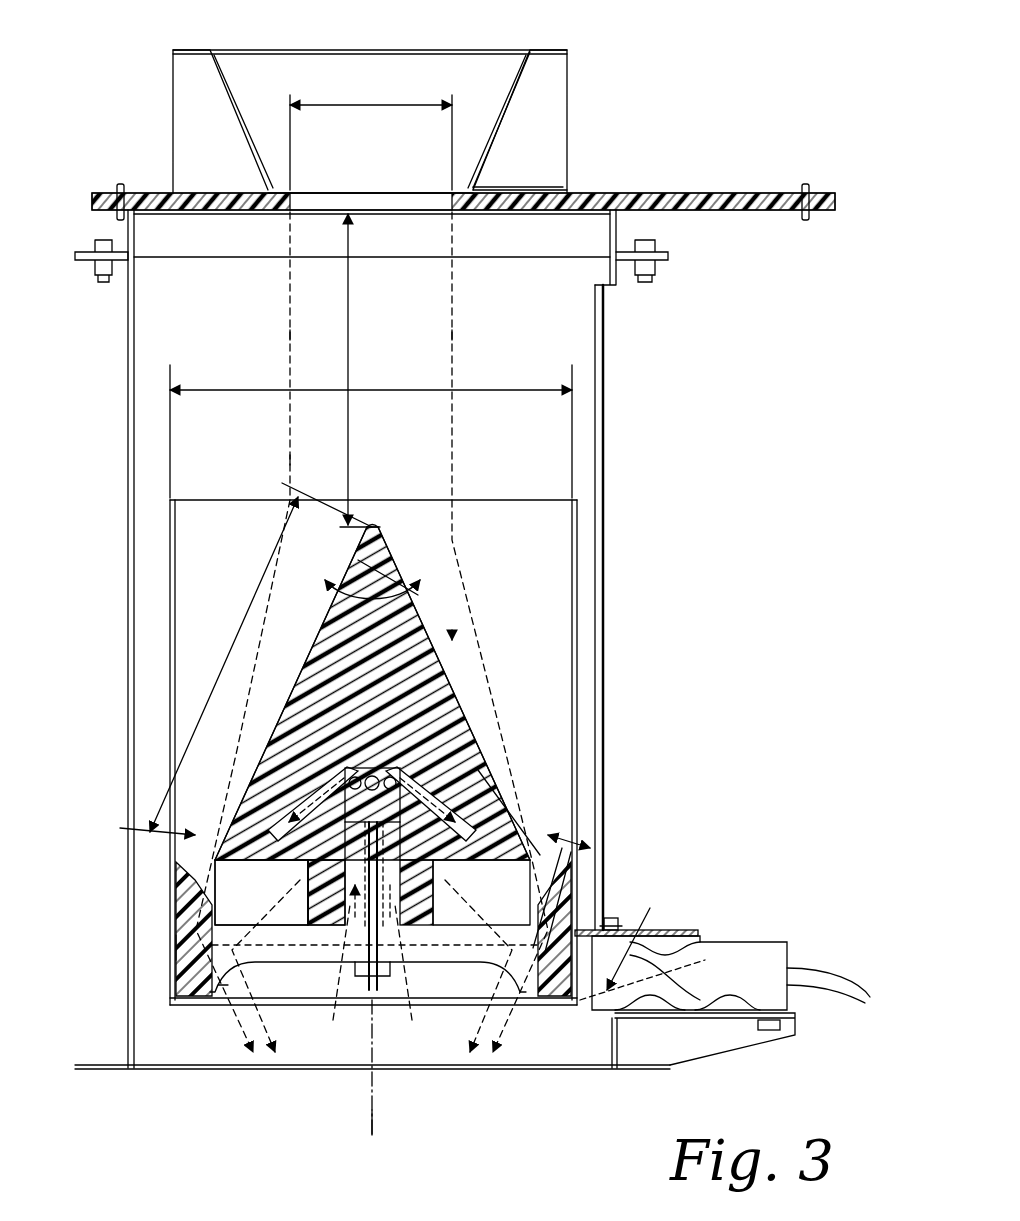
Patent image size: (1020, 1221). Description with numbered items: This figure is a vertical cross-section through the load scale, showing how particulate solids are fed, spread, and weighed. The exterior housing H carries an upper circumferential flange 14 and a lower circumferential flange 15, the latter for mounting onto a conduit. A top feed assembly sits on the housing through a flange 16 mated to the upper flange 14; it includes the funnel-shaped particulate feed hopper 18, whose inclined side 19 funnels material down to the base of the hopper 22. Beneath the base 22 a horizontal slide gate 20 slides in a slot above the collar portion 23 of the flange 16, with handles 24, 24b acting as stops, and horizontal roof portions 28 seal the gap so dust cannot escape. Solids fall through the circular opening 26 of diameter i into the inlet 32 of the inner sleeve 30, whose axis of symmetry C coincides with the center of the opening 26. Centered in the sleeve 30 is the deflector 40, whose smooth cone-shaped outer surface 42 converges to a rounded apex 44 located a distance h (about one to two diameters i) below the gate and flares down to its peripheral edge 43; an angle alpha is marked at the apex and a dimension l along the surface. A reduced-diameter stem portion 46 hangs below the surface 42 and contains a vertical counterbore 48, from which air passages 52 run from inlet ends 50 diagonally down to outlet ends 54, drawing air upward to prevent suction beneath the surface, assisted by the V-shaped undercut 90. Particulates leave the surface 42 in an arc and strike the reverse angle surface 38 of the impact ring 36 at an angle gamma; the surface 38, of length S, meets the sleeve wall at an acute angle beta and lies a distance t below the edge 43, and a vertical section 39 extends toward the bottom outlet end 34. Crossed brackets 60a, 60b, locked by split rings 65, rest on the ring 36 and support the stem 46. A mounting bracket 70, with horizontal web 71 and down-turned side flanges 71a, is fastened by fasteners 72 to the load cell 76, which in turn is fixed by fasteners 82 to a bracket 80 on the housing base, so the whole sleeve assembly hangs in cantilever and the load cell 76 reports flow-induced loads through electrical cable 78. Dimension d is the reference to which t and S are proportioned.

The upper circumferential flange 14 is at (125, 300).
The lower circumferential flange 15 is at (128, 1055).
The flange 16 is at (85, 250).
The particulate feed hopper 18 is at (553, 50).
The hopper inclined wall 19 is at (505, 108).
The slide gate 20 is at (695, 193).
The base of the hopper 22 is at (540, 190).
The collar portion 23 is at (622, 222).
The handle 24 is at (806, 183).
The handle 24b is at (122, 183).
The circular opening 26 is at (400, 190).
The horizontal roof portions 28 is at (270, 212).
The inner sleeve 30 is at (605, 600).
The inlet 32 is at (500, 497).
The bottom outlet end 34 is at (448, 1010).
The impact ring 36 is at (600, 905).
The reverse angle surface 38 is at (195, 860).
The vertical section 39 is at (193, 985).
The particulate solids deflector 40 is at (540, 745).
The outer surface 42 is at (470, 610).
The peripheral edge 43 is at (535, 855).
The apex 44 is at (380, 525).
The stem portion 46 is at (438, 912).
The counterbore 48 is at (318, 880).
The inlet ends 50 is at (480, 713).
The air passages 52 is at (472, 832).
The outlet ends 54 is at (315, 830).
The cross bracket 60a is at (312, 965).
The cross bracket 60b is at (415, 988).
The split rings 65 is at (405, 902).
The mounting bracket 70 is at (700, 930).
The mounting web 71 is at (662, 930).
The side flanges 71a is at (580, 1000).
The fasteners 72 is at (618, 922).
The load cell 76 is at (765, 975).
The electrical cable 78 is at (835, 978).
The bracket 80 is at (725, 1020).
The fasteners 82 is at (780, 1030).
The V-shaped undercut 90 is at (300, 868).
The housing H is at (800, 650).
The axis of symmetry C is at (372, 1118).
The length of reverse angled surface S is at (692, 1015).
The diameter of opening i is at (385, 103).
The apex spacing distance h is at (348, 357).
The reference diameter d is at (418, 390).
The length l is at (218, 645).
The edge-to-ring distance t is at (580, 845).
The cone angle alpha is at (395, 575).
The acute angle beta is at (172, 940).
The impact angle gamma is at (172, 832).